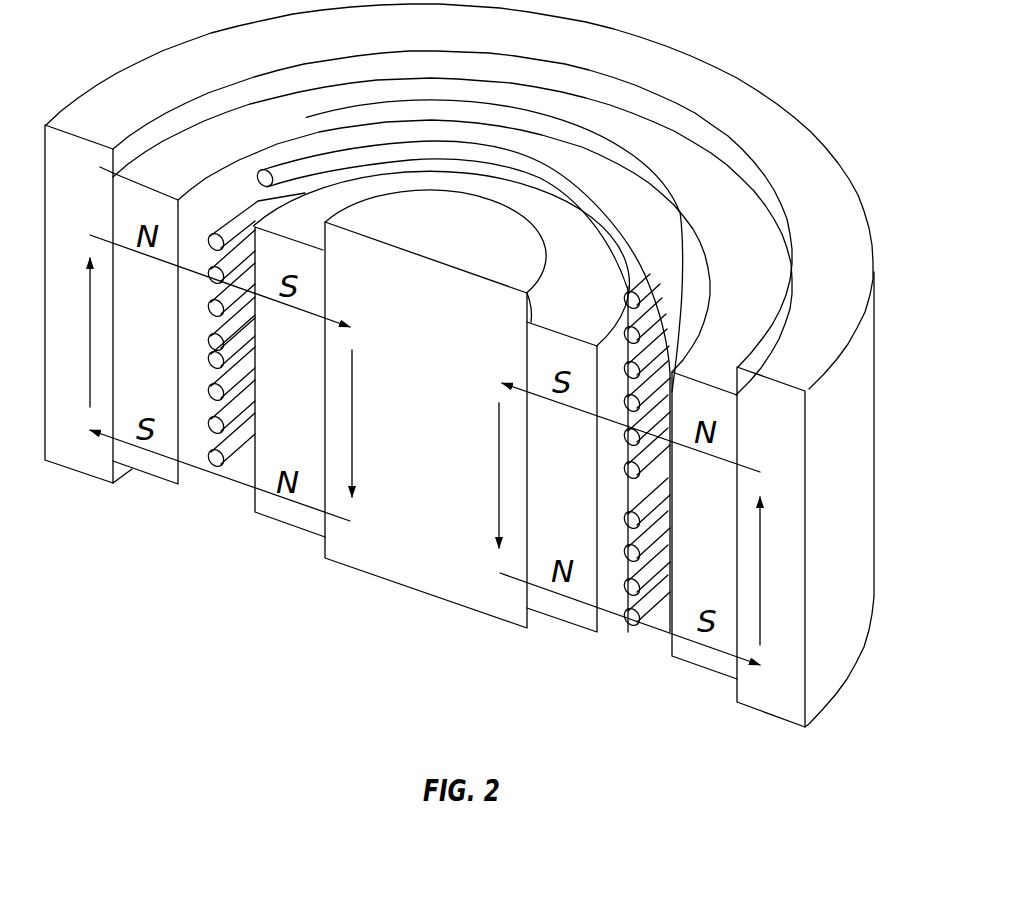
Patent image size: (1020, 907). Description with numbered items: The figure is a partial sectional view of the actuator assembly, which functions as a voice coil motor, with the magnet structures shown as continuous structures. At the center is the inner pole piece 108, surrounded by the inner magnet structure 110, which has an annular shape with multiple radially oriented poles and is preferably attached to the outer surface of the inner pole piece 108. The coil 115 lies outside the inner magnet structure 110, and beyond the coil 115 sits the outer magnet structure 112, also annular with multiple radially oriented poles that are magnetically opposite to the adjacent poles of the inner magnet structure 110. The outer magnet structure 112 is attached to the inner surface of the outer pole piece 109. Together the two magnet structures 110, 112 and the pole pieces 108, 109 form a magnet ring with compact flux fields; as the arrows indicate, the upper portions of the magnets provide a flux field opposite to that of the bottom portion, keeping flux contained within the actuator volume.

The inner pole piece 108 is at (418, 575).
The outer pole piece 109 is at (778, 708).
The inner magnet structure 110 is at (553, 607).
The outer magnet structure 112 is at (160, 473).
The coil 115 is at (593, 193).